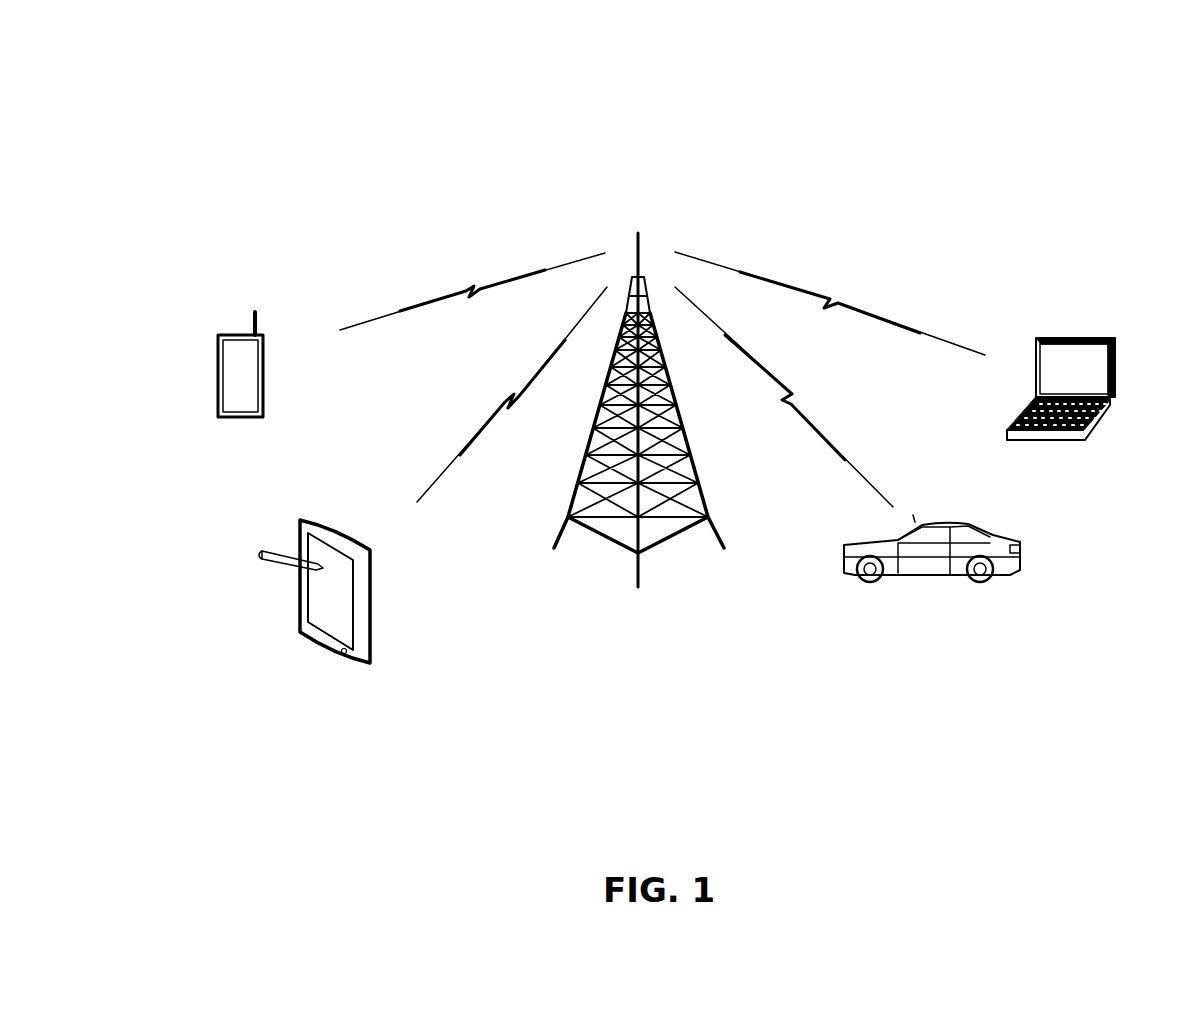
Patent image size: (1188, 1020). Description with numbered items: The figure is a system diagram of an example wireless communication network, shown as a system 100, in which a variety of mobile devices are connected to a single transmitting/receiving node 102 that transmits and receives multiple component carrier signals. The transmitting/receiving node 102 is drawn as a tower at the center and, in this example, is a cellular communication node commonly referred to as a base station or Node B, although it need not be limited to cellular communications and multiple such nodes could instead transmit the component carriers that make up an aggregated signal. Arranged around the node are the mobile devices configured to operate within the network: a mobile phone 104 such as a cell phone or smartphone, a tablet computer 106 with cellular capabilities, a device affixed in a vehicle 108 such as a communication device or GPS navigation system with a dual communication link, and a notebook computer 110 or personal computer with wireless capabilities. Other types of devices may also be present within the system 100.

The system 100 is at (1038, 82).
The transmitting/receiving node 102 is at (640, 252).
The mobile phone 104 is at (218, 346).
The tablet computer 106 is at (300, 527).
The device affixed in a vehicle 108 is at (1018, 572).
The notebook computer 110 is at (1108, 412).